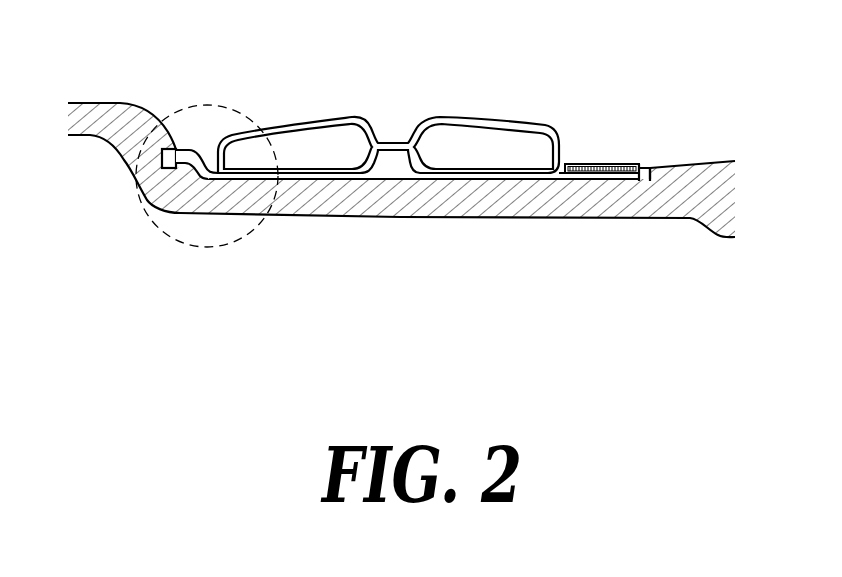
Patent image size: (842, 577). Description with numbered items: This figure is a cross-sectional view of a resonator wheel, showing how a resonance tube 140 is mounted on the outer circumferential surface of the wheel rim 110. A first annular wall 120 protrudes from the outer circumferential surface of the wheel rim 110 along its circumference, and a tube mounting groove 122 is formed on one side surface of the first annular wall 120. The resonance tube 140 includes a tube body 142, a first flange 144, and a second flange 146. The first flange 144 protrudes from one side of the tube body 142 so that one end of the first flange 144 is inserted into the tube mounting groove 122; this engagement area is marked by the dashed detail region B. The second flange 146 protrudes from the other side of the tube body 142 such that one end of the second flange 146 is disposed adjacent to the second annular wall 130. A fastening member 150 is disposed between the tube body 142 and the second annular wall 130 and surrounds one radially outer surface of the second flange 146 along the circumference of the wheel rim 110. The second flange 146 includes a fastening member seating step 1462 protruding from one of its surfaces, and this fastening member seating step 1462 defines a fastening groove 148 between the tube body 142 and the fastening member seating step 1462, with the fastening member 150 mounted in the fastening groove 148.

The wheel rim 110 is at (423, 219).
The first annular wall 120 is at (116, 103).
The tube mounting groove 122 is at (162, 155).
The second annular wall 130 is at (692, 166).
The resonance tube 140 is at (418, 166).
The tube body 142 is at (465, 118).
The first flange 144 is at (187, 180).
The second flange 146 is at (453, 175).
The fastening member seating step 1462 is at (641, 165).
The fastening groove 148 is at (590, 180).
The fastening member 150 is at (598, 164).
The detail region B is at (203, 105).